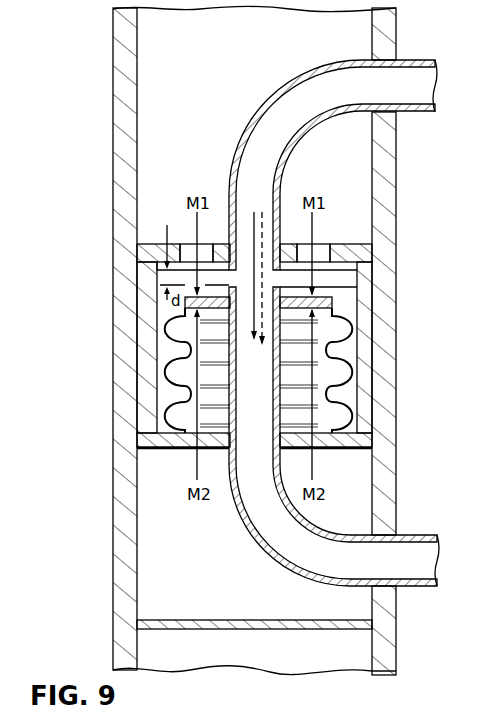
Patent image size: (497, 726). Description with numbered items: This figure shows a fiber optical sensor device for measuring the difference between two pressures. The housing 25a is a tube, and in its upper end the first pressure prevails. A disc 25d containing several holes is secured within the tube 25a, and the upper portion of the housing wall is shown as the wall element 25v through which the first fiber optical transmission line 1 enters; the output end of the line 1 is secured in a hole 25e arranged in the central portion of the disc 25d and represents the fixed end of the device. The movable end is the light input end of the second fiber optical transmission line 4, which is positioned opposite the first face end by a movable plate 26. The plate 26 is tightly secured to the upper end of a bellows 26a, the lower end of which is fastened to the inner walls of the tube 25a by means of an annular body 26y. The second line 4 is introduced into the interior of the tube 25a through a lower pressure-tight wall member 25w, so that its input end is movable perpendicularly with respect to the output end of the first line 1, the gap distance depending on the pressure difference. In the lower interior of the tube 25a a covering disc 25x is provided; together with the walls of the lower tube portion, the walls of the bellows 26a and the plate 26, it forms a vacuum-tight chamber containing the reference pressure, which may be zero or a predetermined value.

The first fiber optical transmission line 1 is at (368, 87).
The second fiber optical transmission line 4 is at (365, 560).
The housing wall upper portion 25v is at (388, 40).
The disc 25d is at (362, 256).
The opening in partition plate 25e is at (322, 252).
The movable plate 26 is at (335, 300).
The annular body 26y is at (365, 346).
The bellows 26a is at (350, 376).
The housing tube 25a is at (385, 440).
The lower pressure-tight wall member 25w is at (390, 602).
The covering disc 25x is at (377, 629).